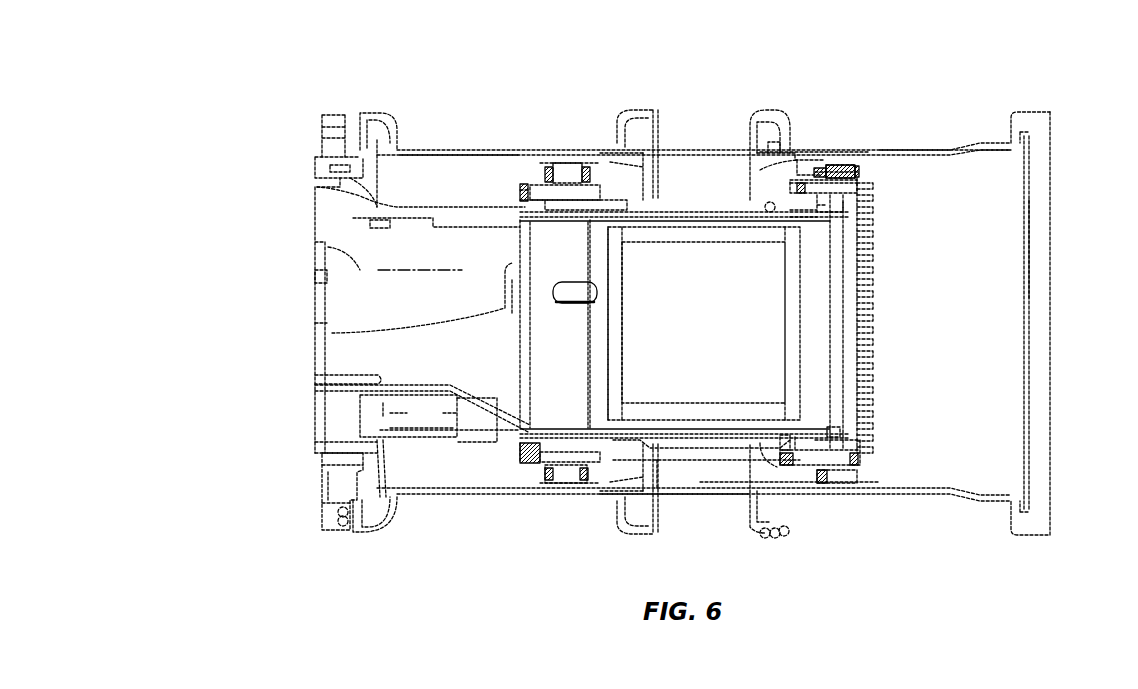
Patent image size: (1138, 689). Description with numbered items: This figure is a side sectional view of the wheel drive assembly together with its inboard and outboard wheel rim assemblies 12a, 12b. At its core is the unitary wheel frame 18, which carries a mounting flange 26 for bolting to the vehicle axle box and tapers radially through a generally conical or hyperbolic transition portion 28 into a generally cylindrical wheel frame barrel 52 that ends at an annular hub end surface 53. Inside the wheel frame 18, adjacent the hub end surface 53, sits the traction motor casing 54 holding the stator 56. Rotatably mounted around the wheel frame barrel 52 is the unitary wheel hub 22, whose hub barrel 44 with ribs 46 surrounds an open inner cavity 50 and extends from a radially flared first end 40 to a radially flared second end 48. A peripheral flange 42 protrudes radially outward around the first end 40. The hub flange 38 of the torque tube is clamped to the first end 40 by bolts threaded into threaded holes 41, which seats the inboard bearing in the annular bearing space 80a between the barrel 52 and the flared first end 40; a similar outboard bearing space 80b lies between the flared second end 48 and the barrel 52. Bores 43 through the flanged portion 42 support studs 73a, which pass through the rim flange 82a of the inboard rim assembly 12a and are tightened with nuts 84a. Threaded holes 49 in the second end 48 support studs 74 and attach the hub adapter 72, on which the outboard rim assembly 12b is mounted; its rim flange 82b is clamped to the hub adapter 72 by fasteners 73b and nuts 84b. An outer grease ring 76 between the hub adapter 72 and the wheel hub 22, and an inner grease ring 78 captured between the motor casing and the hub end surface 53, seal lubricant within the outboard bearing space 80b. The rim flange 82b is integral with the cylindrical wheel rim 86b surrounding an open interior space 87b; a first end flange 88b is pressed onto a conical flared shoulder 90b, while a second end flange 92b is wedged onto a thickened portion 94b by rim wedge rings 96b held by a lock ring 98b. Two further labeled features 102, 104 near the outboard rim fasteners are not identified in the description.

The wheel frame 18 is at (295, 225).
The inboard wheel rim assembly 12a is at (478, 85).
The outboard wheel rim assembly 12b is at (848, 28).
The wheel hub 22 is at (742, 552).
The mounting flange 26 is at (350, 137).
The transition portion 28 is at (345, 200).
The hub flange 38 is at (540, 467).
The first end 40 is at (602, 465).
The threaded holes 41 is at (588, 462).
The peripheral flange 42 is at (555, 472).
The bores 43 is at (558, 470).
The hub barrel 44 is at (672, 445).
The ribs 46 is at (710, 452).
The second end 48 is at (785, 468).
The threaded holes 49 is at (803, 468).
The inner cavity 50 is at (725, 225).
The wheel frame barrel 52 is at (540, 420).
The hub end surface 53 is at (820, 213).
The casing 54 is at (703, 222).
The stator 56 is at (668, 230).
The hub adapter 72 is at (855, 188).
The studs 73a is at (553, 160).
The studs 73b is at (822, 173).
The studs 74 is at (873, 228).
The outer grease ring 76 is at (832, 443).
The inner grease ring 78 is at (833, 432).
The annular bearing space 80a is at (598, 201).
The outboard bearing space 80b is at (806, 438).
The rim flange 82a is at (572, 160).
The rim flange 82b is at (835, 165).
The nuts 84a is at (601, 150).
The nuts 84b is at (822, 172).
The wheel rim 86b is at (880, 150).
The open interior space 87b is at (990, 190).
The first end flange 88b is at (1008, 118).
The shoulder 90b is at (1026, 152).
The second end flange 92b is at (781, 110).
The thickened portion 94b is at (750, 133).
The rim wedge rings 96b is at (812, 160).
The lock ring 98b is at (757, 113).
The seal 102 is at (866, 160).
The seal 104 is at (842, 165).